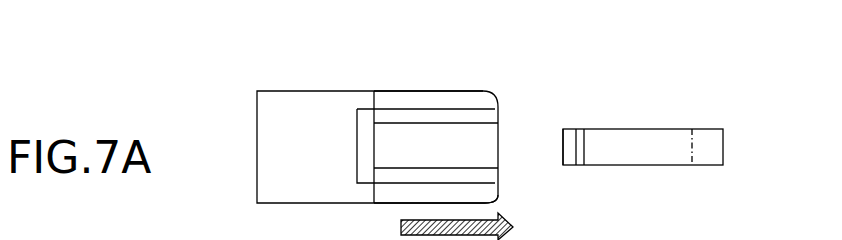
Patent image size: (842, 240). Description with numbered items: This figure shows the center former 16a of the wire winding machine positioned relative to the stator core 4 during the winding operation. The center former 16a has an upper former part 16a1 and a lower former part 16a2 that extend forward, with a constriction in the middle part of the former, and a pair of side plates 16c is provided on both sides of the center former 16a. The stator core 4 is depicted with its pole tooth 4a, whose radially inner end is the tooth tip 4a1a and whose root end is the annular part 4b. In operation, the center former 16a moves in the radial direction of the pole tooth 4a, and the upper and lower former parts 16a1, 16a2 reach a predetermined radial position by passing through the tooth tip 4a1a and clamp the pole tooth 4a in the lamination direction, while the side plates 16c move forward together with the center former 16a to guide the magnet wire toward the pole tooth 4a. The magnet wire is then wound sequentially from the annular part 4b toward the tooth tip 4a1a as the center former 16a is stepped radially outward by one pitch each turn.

The center former 16a is at (312, 91).
The upper former part 16a1 is at (433, 97).
The lower former part 16a2 is at (497, 196).
The side plate 16c is at (463, 108).
The stator core 4 is at (707, 129).
The pole tooth 4a is at (637, 129).
The tooth tip 4a1a is at (572, 129).
The annular part 4b is at (722, 143).